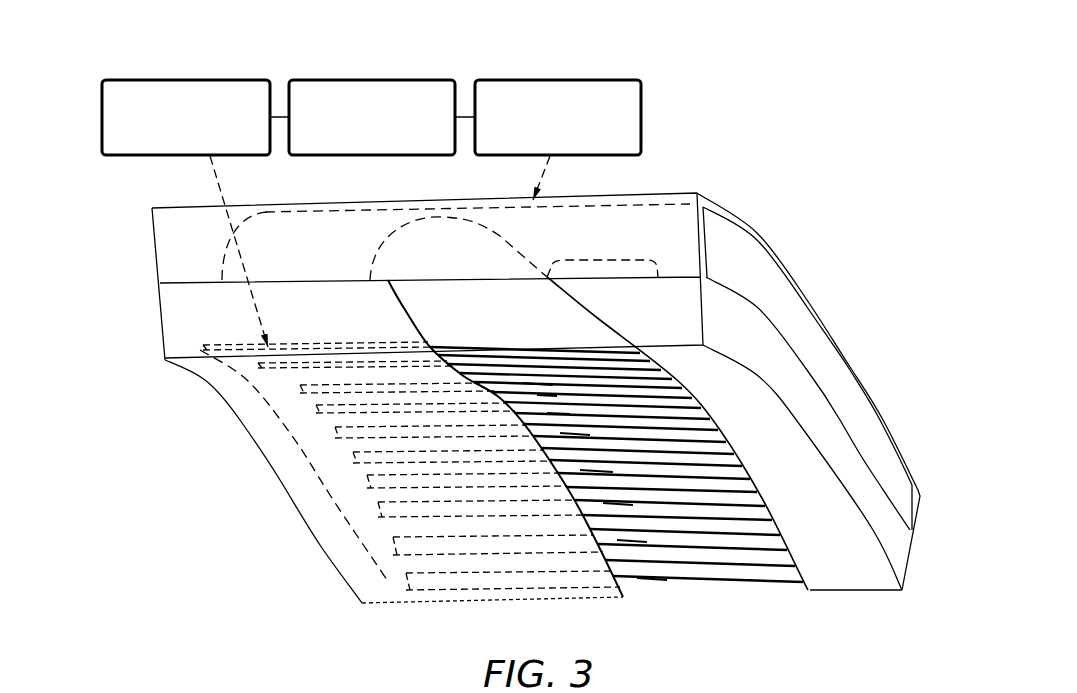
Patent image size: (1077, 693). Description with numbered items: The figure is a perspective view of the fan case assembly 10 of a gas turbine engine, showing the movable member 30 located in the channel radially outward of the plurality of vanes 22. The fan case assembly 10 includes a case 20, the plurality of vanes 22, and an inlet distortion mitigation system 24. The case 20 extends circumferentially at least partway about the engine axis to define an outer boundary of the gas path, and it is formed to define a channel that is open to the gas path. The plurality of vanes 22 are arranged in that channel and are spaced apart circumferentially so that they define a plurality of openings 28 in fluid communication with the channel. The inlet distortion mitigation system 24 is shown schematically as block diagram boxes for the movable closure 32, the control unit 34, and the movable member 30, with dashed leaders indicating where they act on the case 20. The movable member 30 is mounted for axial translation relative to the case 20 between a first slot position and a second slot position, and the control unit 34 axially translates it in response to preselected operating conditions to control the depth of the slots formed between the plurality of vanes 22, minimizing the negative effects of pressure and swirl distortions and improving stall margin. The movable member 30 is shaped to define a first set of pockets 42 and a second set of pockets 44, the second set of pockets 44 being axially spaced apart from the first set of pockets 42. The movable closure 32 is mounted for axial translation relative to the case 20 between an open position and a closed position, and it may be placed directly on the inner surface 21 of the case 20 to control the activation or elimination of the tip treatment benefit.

The fan case assembly 10 is at (90, 100).
The case 20 is at (173, 203).
The inner surface 21 is at (243, 397).
The plurality of vanes 22 is at (538, 443).
The inlet distortion mitigation system 24 is at (268, 38).
The plurality of openings 28 is at (618, 510).
The movable member 30 is at (507, 80).
The movable closure 32 is at (202, 80).
The control unit 34 is at (343, 80).
The first set of pockets 42 is at (578, 255).
The second set of pockets 44 is at (434, 258).